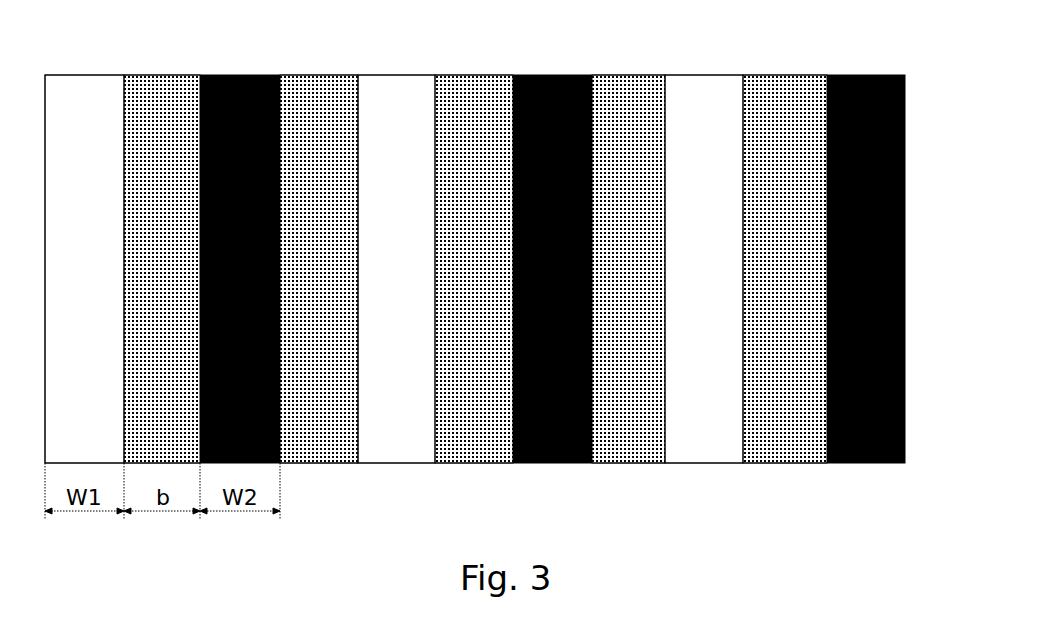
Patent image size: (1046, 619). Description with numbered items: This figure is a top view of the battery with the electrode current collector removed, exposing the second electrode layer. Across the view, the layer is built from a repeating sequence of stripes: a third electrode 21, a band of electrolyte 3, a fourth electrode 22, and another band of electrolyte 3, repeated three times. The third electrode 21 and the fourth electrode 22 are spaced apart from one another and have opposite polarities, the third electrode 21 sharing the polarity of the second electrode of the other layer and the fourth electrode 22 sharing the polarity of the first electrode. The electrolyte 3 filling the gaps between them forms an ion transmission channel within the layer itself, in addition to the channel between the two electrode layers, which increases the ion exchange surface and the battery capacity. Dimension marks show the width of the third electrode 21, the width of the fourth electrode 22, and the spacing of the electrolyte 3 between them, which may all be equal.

The third electrode 21 is at (85, 88).
The fourth electrode 22 is at (243, 75).
The electrolyte 3 is at (160, 90).